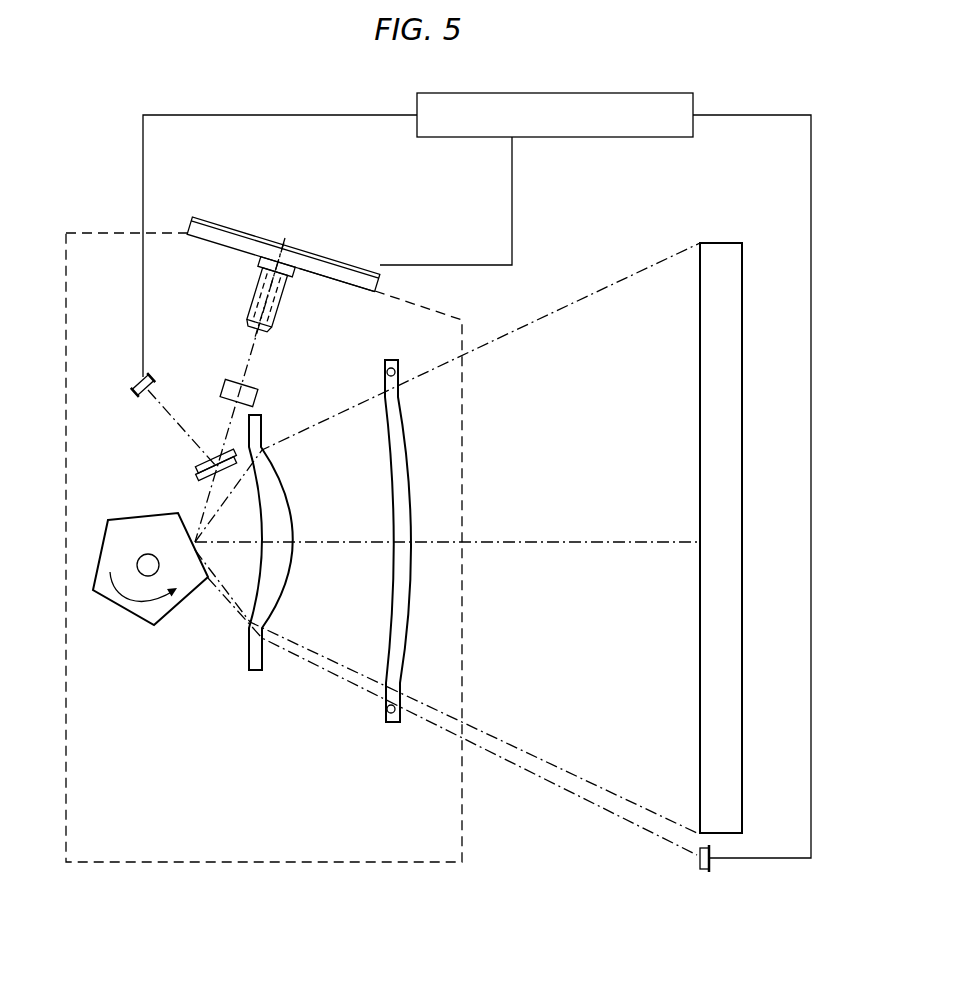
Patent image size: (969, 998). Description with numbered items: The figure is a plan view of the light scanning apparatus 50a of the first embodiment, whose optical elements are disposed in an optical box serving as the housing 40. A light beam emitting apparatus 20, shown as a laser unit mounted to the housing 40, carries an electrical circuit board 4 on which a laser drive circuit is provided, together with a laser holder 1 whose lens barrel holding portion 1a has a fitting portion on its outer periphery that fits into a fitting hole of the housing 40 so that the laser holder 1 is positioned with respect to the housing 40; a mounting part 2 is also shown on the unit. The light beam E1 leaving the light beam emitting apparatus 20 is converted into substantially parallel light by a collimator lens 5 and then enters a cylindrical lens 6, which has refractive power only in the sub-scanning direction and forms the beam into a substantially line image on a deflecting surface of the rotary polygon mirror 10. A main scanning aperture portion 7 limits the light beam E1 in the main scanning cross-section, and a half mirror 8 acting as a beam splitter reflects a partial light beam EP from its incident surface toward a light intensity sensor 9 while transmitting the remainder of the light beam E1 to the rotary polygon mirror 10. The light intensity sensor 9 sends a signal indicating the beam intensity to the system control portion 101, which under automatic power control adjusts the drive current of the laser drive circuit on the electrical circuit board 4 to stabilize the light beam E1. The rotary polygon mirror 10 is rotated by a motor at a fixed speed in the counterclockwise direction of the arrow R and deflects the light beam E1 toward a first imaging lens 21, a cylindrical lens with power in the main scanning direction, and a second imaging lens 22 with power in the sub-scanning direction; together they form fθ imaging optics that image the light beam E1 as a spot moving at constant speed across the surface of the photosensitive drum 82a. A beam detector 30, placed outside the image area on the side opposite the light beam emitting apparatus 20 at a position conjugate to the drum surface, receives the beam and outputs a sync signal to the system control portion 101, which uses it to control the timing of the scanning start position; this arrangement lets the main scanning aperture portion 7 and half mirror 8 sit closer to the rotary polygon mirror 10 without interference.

The laser holder 1 is at (343, 284).
The lens barrel holding portion 1a is at (287, 295).
The mounting portion 2 is at (283, 242).
The electrical circuit board 4 is at (338, 257).
The collimator lens 5 is at (263, 335).
The cylindrical lens 6 is at (232, 378).
The main scanning aperture portion 7 is at (205, 460).
The half mirror 8 is at (195, 475).
The light intensity sensor 9 is at (136, 380).
The rotary polygon mirror 10 is at (120, 612).
The light beam emitting apparatus 20 is at (227, 209).
The first imaging lens 21 is at (253, 672).
The second imaging lens 22 is at (392, 724).
The beam detector 30 is at (703, 872).
The housing 40 is at (462, 812).
The light scanning apparatus 50a is at (93, 204).
The photosensitive drum 82a is at (700, 630).
The system control portion 101 is at (568, 137).
The light beam E1 is at (205, 503).
The partial light beam EP is at (160, 406).
The arrow R is at (153, 603).